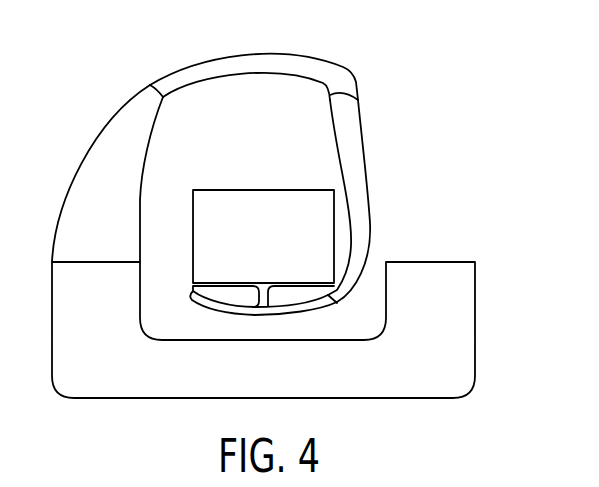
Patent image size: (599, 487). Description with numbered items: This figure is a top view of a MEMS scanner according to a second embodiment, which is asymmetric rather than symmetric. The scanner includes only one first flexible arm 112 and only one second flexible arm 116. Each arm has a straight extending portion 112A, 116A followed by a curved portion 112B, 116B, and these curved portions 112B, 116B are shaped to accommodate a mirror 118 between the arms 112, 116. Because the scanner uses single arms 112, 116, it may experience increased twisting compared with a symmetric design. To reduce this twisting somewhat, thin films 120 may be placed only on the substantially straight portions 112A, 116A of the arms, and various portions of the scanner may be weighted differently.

The first flexible arm 112 is at (198, 135).
The straight extending portion 112A is at (83, 150).
The curved portion 112B is at (197, 63).
The second flexible arm 116 is at (308, 220).
The straight extending portion 116A is at (367, 213).
The curved portion 116B is at (253, 317).
The mirror 118 is at (278, 250).
The thin film 120 is at (118, 225).